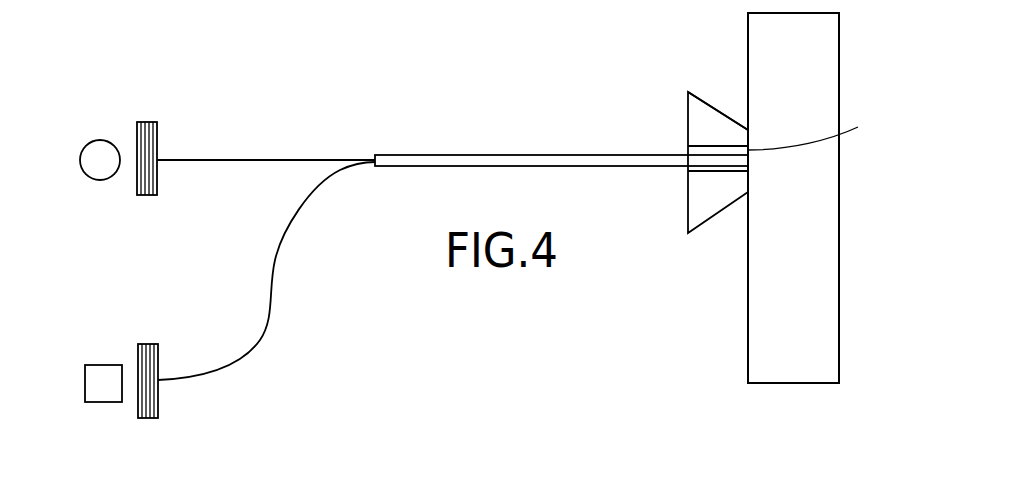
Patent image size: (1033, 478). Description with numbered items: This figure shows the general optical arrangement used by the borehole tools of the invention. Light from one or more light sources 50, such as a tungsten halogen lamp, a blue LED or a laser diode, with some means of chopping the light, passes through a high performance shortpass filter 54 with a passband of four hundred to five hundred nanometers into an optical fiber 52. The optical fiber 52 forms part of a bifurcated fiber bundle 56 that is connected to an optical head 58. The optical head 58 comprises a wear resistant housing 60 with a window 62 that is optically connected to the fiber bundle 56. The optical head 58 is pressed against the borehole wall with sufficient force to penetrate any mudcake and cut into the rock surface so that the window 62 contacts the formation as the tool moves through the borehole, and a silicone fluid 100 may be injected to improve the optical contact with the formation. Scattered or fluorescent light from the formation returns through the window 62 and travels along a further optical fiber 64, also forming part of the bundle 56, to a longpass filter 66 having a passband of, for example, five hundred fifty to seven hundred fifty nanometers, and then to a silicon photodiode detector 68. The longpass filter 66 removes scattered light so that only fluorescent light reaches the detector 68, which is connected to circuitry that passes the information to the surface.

The light source 50 is at (100, 140).
The optical fiber 52 is at (250, 159).
The shortpass filter 54 is at (160, 132).
The bifurcated fiber bundle 56 is at (425, 155).
The optical head 58 is at (715, 227).
The wear resistant housing 60 is at (705, 100).
The window 62 is at (815, 133).
The further optical fiber 64 is at (233, 356).
The longpass filter 66 is at (150, 418).
The silicon photodiode detector 68 is at (100, 365).
The silicone fluid 100 is at (748, 192).